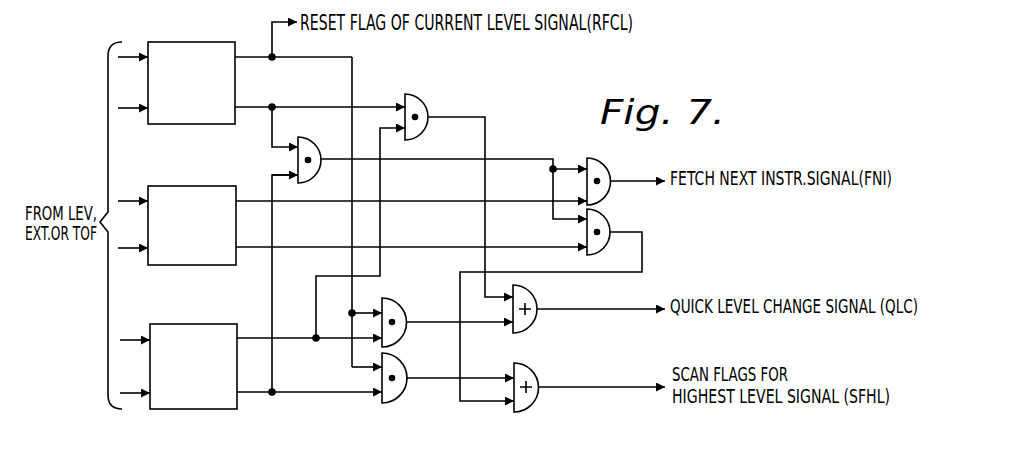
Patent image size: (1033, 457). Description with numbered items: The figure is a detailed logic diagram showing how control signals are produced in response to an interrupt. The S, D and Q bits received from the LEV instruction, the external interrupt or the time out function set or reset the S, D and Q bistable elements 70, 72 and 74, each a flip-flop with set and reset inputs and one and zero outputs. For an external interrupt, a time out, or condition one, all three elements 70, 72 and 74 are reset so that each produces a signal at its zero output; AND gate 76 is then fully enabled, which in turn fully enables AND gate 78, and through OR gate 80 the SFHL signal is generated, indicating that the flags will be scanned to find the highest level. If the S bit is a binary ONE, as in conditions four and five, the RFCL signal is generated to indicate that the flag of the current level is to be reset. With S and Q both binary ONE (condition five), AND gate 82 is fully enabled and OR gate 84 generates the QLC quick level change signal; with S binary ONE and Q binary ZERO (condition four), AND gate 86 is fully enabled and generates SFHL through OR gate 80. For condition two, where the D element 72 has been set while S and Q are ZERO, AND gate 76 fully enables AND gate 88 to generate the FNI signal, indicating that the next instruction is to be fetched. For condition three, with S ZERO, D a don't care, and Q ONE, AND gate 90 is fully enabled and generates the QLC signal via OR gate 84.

The S bistable element 70 is at (193, 43).
The D bistable element 72 is at (210, 187).
The Q bistable element 74 is at (160, 328).
The AND gate 76 is at (305, 140).
The AND gate 78 is at (600, 223).
The OR gate 80 is at (536, 376).
The AND gate 82 is at (398, 303).
The OR gate 84 is at (536, 299).
The AND gate 86 is at (398, 365).
The AND gate 88 is at (598, 165).
The AND gate 90 is at (412, 97).